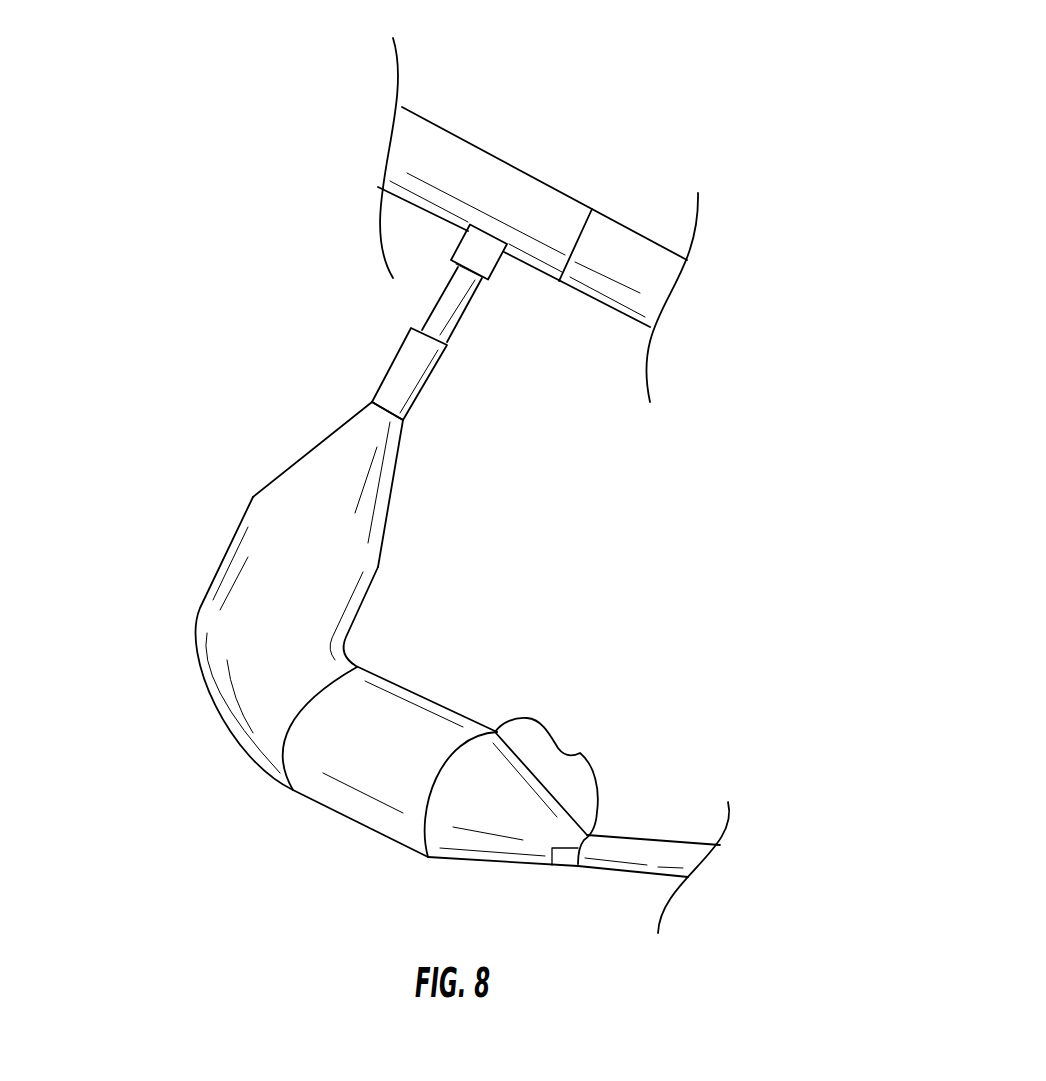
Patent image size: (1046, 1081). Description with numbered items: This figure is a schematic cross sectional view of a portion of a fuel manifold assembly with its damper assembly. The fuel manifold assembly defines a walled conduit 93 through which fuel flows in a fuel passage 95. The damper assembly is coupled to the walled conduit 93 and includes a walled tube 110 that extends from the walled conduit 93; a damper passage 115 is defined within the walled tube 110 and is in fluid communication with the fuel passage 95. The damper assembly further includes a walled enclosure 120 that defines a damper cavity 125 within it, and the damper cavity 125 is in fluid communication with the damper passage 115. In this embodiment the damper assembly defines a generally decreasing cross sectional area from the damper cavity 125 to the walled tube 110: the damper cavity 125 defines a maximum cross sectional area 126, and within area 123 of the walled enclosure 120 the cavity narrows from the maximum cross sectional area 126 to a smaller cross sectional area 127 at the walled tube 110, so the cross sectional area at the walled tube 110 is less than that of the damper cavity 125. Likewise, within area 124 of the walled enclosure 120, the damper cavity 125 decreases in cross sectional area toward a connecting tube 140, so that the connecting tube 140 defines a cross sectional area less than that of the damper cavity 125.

The walled conduit 93 is at (531, 174).
The fuel passage 95 is at (433, 190).
The walled tube 110 is at (490, 250).
The damper passage 115 is at (392, 374).
The walled enclosure 120 is at (197, 650).
The area of the walled enclosure 123 is at (417, 427).
The area of the walled enclosure 124 is at (581, 754).
The damper cavity 125 is at (290, 655).
The maximum cross sectional area 126 is at (378, 567).
The cross sectional area 127 is at (401, 419).
The connecting tube 140 is at (635, 834).